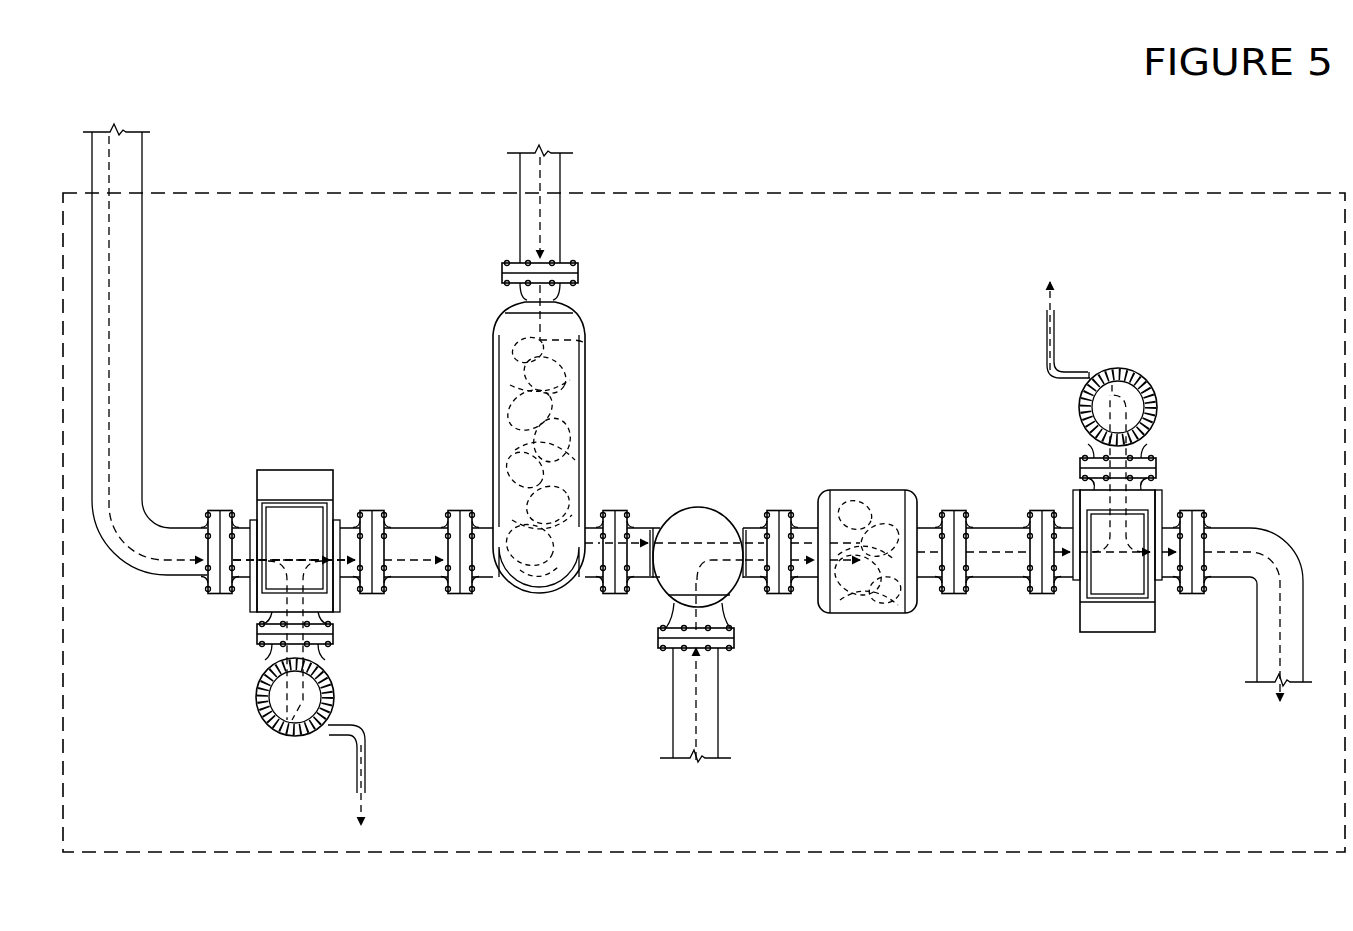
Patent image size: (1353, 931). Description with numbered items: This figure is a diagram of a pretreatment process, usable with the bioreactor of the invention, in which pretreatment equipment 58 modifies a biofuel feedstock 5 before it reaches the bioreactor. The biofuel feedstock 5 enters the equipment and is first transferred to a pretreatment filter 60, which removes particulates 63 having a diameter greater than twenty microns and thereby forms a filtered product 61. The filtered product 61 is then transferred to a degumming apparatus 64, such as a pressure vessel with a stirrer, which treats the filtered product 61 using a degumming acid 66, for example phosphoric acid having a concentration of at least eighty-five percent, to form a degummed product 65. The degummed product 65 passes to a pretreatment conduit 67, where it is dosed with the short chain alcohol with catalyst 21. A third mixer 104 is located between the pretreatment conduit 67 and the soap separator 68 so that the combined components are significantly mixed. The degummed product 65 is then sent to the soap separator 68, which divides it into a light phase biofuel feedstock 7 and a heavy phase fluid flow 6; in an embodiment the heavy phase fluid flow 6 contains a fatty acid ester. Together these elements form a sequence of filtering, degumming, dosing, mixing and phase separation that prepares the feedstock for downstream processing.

The biofuel feedstock 5 is at (110, 168).
The pretreatment equipment 58 is at (930, 193).
The degumming acid 66 is at (540, 240).
The degumming apparatus 64 is at (493, 440).
The pretreatment conduit 67 is at (672, 506).
The degummed product 65 is at (712, 543).
The third mixer 104 is at (866, 490).
The light phase biofuel feedstock 7 is at (1047, 310).
The soap separator 68 is at (1147, 370).
The filtered product 61 is at (413, 562).
The short chain alcohol with catalyst 21 is at (698, 700).
The pretreatment filter 60 is at (265, 727).
The particulates 63 is at (365, 803).
The heavy phase fluid flow 6 is at (1278, 633).